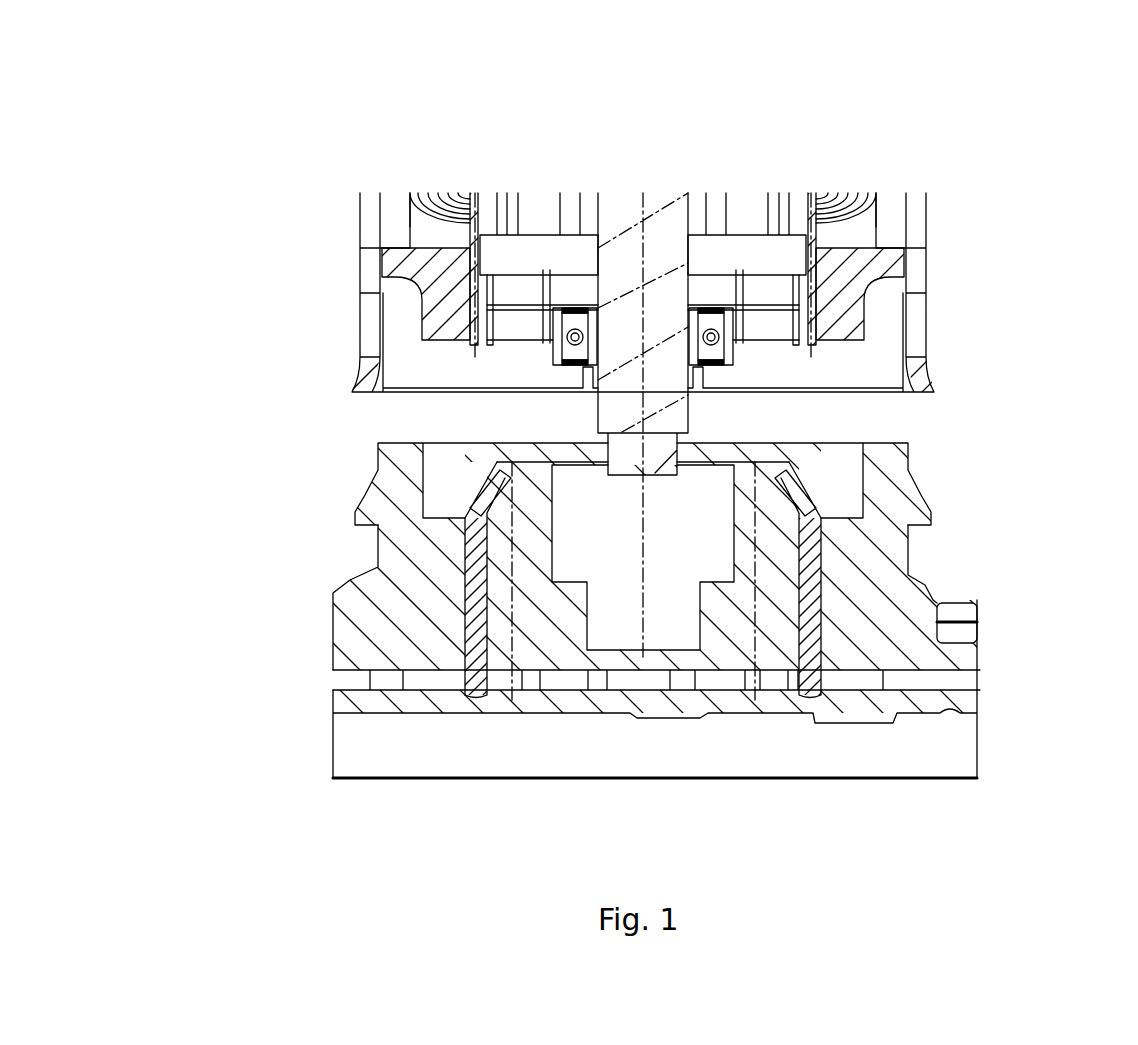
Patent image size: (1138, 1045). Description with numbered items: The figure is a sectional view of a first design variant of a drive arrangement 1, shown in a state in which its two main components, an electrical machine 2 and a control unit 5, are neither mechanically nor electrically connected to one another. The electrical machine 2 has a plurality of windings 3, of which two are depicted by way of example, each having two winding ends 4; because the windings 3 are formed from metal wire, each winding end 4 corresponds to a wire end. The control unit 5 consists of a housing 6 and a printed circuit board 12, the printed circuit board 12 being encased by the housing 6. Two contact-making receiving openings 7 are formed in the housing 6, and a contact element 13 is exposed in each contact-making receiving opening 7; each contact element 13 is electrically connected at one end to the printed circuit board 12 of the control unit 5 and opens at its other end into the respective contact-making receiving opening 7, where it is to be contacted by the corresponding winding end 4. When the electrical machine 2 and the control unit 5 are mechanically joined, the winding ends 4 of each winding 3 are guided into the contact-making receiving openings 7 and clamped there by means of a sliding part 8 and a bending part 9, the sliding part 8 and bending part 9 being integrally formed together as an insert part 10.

The drive arrangement 1 is at (266, 126).
The electrical machine 2 is at (958, 235).
The winding 3 is at (845, 192).
The winding end 4 is at (785, 328).
The control unit 5 is at (957, 513).
The housing 6 is at (880, 633).
The contact-making receiving opening 7 is at (845, 495).
The sliding part 8 is at (555, 284).
The bending part 9 is at (555, 284).
The insert part 10 is at (820, 318).
The printed circuit board 12 is at (437, 680).
The contact element 13 is at (470, 553).